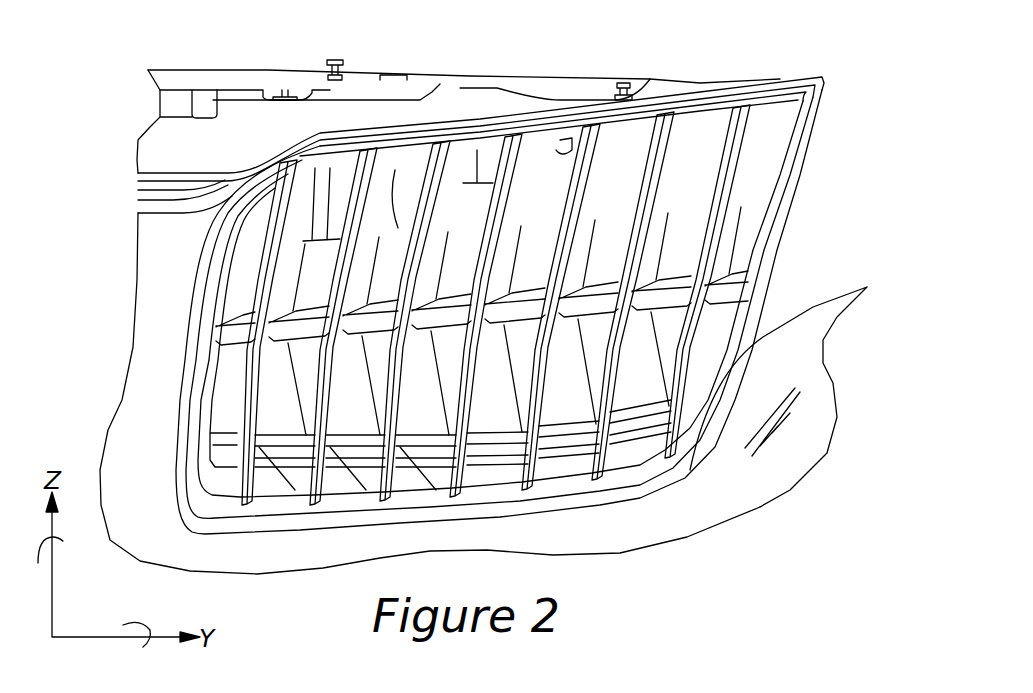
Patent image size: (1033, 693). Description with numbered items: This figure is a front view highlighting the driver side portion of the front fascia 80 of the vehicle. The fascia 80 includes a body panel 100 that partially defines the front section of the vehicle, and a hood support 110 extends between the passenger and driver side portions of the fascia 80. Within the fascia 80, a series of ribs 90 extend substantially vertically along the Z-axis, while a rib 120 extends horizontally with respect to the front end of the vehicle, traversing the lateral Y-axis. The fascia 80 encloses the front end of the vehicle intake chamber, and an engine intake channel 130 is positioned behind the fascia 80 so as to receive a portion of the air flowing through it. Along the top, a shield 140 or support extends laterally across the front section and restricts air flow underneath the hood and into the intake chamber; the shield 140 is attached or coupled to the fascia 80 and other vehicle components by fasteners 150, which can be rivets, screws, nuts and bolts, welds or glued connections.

The front fascia 80 is at (830, 202).
The ribs 90 is at (735, 212).
The body panel 100 is at (727, 503).
The hood support 110 is at (147, 353).
The rib 120 is at (677, 263).
The engine intake channel 130 is at (477, 175).
The shield 140 is at (417, 80).
The fasteners 150 is at (338, 60).